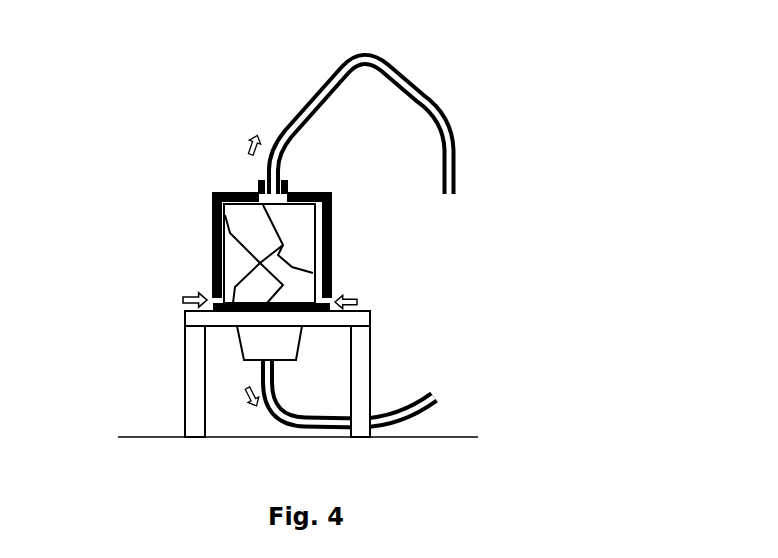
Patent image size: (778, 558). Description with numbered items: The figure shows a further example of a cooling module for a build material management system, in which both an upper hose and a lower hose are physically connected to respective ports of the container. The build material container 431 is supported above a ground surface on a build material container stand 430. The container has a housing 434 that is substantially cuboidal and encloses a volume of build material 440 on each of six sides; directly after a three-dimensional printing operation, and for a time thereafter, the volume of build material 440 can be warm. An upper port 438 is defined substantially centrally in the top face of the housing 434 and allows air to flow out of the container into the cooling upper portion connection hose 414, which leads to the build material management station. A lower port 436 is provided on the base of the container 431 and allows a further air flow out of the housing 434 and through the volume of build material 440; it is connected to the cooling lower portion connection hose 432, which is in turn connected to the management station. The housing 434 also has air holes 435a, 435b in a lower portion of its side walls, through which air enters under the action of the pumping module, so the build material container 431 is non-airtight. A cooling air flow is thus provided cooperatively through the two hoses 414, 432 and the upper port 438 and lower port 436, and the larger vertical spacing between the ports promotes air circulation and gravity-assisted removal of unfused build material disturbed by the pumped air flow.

The cooling upper portion connection hose 414 is at (320, 85).
The build material container stand 430 is at (185, 353).
The build material container 431 is at (192, 245).
The cooling lower portion connection hose 432 is at (293, 418).
The housing 434 is at (211, 228).
The air hole 435a is at (211, 296).
The air hole 435b is at (328, 293).
The lower port 436 is at (300, 347).
The upper port 438 is at (280, 177).
The volume of build material 440 is at (302, 230).